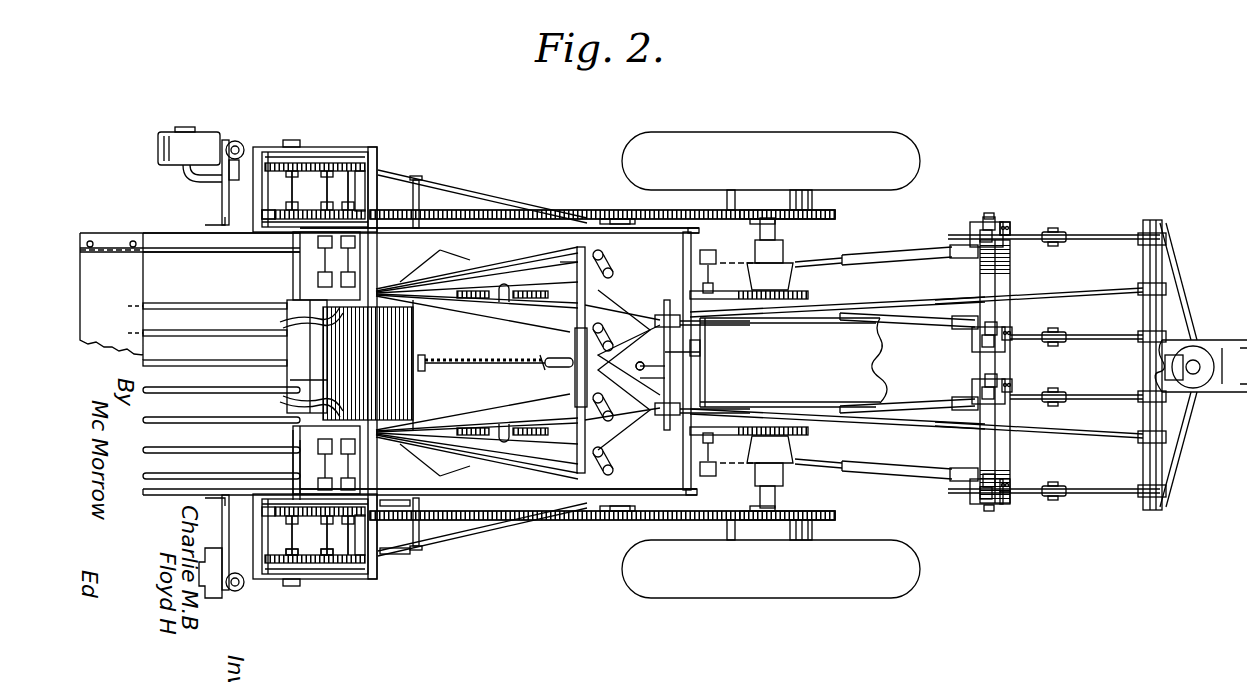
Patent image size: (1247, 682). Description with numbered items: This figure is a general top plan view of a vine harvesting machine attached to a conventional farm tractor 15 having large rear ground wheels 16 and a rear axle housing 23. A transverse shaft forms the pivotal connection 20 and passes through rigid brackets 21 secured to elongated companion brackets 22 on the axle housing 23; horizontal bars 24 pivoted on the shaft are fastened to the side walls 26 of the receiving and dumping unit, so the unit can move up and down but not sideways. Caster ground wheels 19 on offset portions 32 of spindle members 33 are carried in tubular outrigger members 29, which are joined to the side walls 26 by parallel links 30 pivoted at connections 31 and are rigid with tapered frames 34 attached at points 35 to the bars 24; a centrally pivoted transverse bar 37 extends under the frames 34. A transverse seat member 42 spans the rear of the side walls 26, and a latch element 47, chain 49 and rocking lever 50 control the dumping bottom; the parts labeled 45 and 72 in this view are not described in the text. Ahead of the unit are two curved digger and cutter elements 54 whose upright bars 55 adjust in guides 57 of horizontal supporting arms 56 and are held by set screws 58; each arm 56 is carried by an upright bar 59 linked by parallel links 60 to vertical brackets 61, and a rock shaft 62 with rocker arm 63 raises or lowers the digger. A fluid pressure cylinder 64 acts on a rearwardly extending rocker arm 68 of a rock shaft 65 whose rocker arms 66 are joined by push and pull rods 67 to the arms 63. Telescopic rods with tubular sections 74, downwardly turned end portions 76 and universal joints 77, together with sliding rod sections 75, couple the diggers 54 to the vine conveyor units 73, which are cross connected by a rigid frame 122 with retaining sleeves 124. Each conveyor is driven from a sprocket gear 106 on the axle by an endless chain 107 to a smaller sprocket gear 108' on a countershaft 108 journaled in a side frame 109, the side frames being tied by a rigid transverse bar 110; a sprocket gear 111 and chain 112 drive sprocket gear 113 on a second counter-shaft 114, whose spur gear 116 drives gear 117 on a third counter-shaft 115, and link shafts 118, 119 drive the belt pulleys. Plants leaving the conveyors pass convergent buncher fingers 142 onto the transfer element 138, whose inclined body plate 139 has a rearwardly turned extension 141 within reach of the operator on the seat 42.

The farm tractor 15 is at (898, 372).
The ground wheels 16 is at (853, 132).
The caster ground wheels 19 is at (212, 132).
The pivotal connection shaft 20 is at (700, 244).
The rigid brackets 21 is at (713, 290).
The companion brackets 22 is at (738, 300).
The rear axle housing 23 is at (790, 278).
The horizontal rods or bars 24 is at (550, 227).
The side walls 26 is at (182, 233).
The outrigger members 29 is at (240, 143).
The parallel links 30 is at (228, 210).
The link pivot connection 31 is at (222, 226).
The offset portions 32 is at (190, 182).
The vertical spindle members 33 is at (245, 150).
The forwardly extending frames 34 is at (450, 186).
The frame attachment 35 is at (608, 207).
The transverse bar 37 is at (414, 345).
The transverse seat member 42 is at (112, 246).
The tubes 45 is at (250, 305).
The latch element 47 is at (455, 360).
The chain 49 is at (497, 360).
The rocking lever 50 is at (540, 360).
The digger and cutter element 54 is at (1010, 274).
The upright bars 55 is at (1005, 217).
The horizontal supporting arms 56 is at (1035, 234).
The guides 57 is at (983, 218).
The set screws 58 is at (990, 217).
The upright bar 59 is at (1060, 230).
The parallel horizontal links 60 is at (1103, 241).
The vertical brackets 61 is at (1143, 226).
The rock shaft 62 is at (1142, 261).
The rocker arm 63 is at (1158, 288).
The fluid pressure cylinder 64 is at (665, 378).
The rock shaft 65 is at (665, 352).
The rocker arms 66 is at (700, 342).
The push and pull rod 67 is at (892, 312).
The rearwardly extending rocker arm 68 is at (636, 367).
The roller links 72 is at (608, 270).
The vine conveyor unit 73 is at (470, 258).
The tubular section 74 is at (903, 250).
The rod section 75 is at (830, 259).
The downwardly turned end portions 76 is at (950, 260).
The universal joints 77 is at (975, 262).
The sprocket gear 106 is at (797, 219).
The endless chain 107 is at (497, 212).
The countershaft 108 is at (309, 537).
The smaller sprocket gear 108' is at (248, 346).
The side frame 109 is at (372, 148).
The rigid transverse bar 110 is at (368, 471).
The sprocket gear 111 is at (302, 153).
The chain 112 is at (338, 152).
The sprocket gear 113 is at (360, 585).
The second counter-shaft 114 is at (358, 178).
The third counter-shaft 115 is at (330, 205).
The spur gear 116 is at (397, 548).
The spur gear 117 is at (300, 490).
The link shaft 118 is at (388, 548).
The link shaft 119 is at (297, 460).
The rigid frame 122 is at (562, 262).
The retaining sleeves 124 is at (576, 383).
The transfer element 138 is at (287, 373).
The inclined body plate 139 is at (395, 393).
The rearwardly turned extension 141 is at (303, 378).
The buncher fingers 142 is at (290, 325).